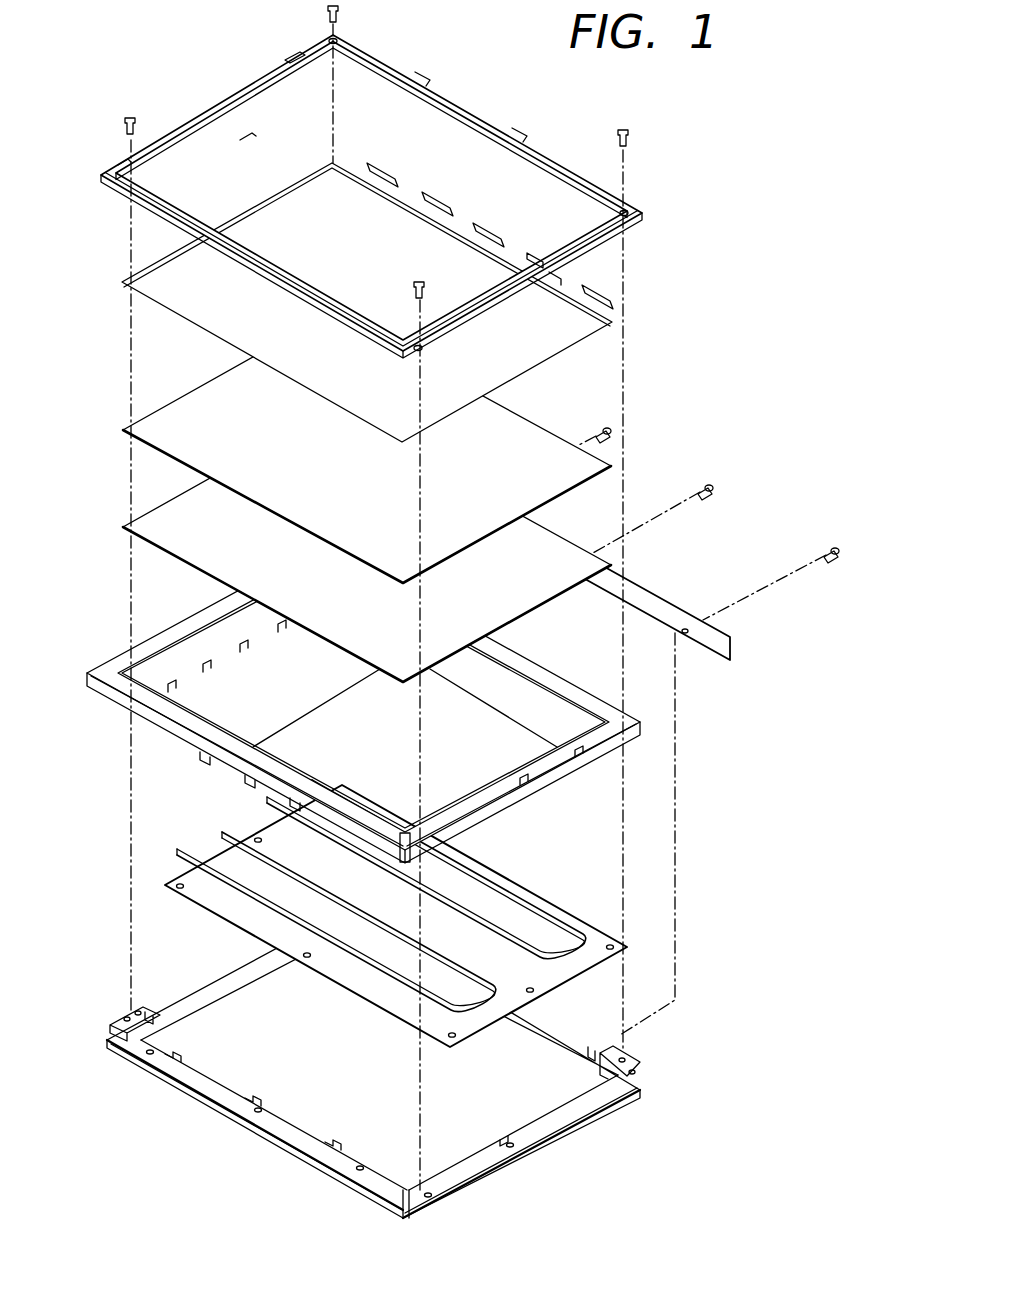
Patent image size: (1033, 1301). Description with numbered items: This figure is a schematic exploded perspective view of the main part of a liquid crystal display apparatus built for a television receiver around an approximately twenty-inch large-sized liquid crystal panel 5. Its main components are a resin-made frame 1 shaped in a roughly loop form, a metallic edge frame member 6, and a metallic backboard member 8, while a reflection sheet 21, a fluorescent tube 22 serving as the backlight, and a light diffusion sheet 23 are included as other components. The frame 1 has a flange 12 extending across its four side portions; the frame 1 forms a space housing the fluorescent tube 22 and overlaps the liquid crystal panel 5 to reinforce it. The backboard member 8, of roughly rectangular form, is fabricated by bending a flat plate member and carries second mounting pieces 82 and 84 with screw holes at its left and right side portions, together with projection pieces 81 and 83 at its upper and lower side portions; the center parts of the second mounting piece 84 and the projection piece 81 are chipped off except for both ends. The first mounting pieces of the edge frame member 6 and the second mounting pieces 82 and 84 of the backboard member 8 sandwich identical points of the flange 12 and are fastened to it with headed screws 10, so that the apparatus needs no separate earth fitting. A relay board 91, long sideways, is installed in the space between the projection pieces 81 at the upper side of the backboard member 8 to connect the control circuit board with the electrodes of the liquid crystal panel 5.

The frame 1 is at (104, 638).
The liquid crystal panel 5 is at (165, 298).
The edge frame member 6 is at (209, 91).
The backboard member 8 is at (390, 1065).
The screws 10 is at (340, 12).
The flange 12 is at (553, 783).
The reflection sheet 21 is at (387, 998).
The fluorescent tube 22 is at (347, 953).
The light diffusion sheet 23 is at (334, 645).
The projection piece 81 is at (627, 1058).
The second mounting piece 82 is at (120, 1016).
The projection piece 83 is at (198, 1100).
The second mounting piece 84 is at (557, 1123).
The relay board 91 is at (660, 598).